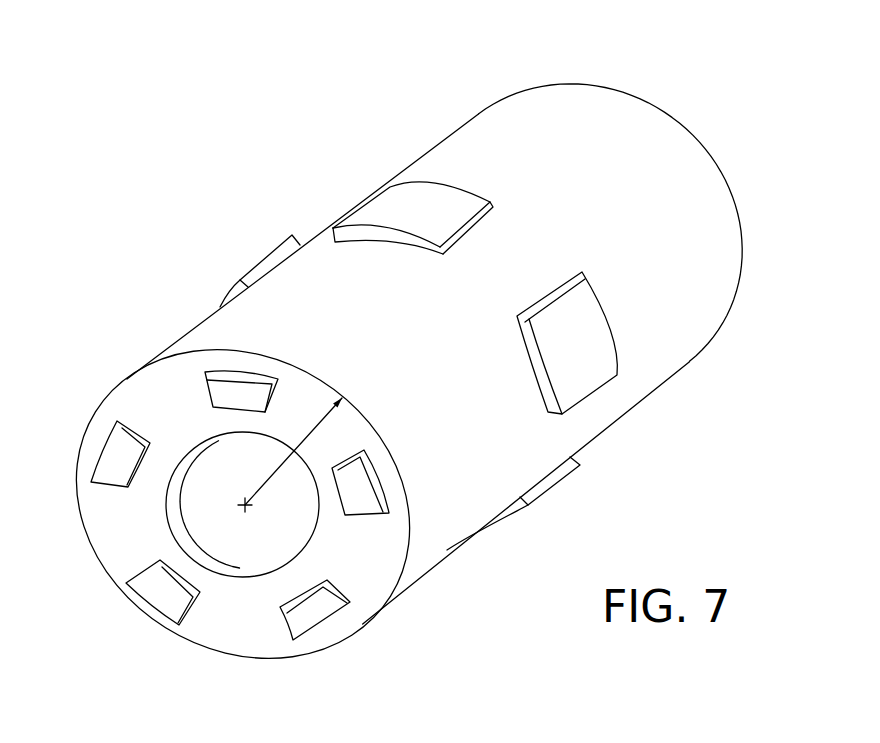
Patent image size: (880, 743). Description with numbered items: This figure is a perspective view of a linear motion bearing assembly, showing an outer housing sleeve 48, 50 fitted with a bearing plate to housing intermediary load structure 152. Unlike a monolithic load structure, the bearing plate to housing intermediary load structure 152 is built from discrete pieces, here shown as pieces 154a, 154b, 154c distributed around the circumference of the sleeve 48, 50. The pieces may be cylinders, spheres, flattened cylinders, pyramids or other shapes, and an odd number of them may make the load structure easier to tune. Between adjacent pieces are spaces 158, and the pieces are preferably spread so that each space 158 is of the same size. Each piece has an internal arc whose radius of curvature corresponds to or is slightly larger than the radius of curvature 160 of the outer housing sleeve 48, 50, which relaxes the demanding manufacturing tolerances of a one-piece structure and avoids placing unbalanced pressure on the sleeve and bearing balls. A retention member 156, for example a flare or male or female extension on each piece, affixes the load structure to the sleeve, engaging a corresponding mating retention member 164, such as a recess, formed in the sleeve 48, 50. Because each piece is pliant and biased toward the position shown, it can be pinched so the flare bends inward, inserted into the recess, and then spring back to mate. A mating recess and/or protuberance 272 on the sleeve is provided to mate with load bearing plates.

The outer housing sleeve 48 is at (415, 402).
The outer housing sleeve 50 is at (653, 170).
The bearing plate to housing intermediary load structure 152 is at (300, 202).
The piece 154a is at (402, 208).
The piece 154b is at (573, 327).
The piece 154c is at (547, 499).
The retention member 156 is at (516, 122).
The mating retention member 164 is at (497, 213).
The space 158 is at (523, 255).
The radius of curvature 160 is at (303, 441).
The mating recess and/or protuberance 272 is at (313, 610).